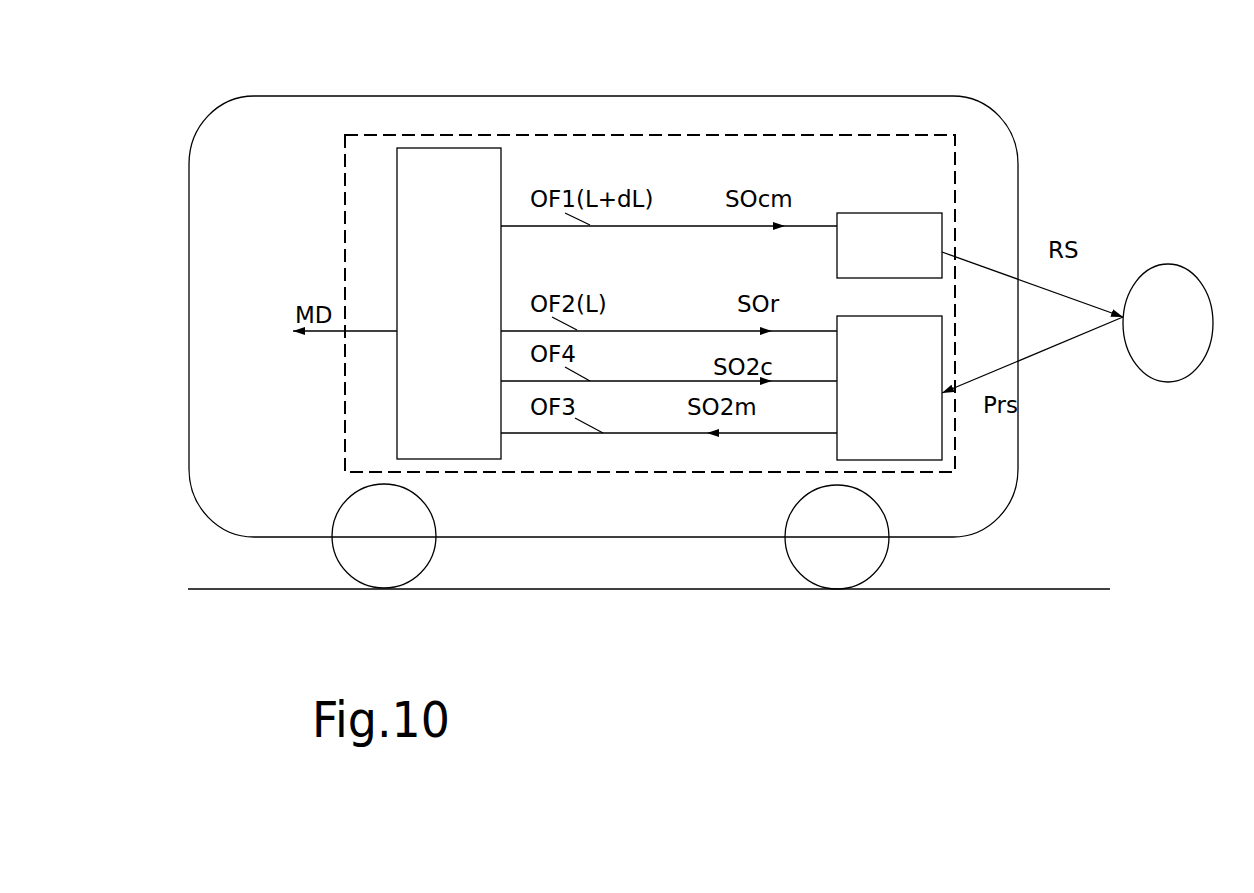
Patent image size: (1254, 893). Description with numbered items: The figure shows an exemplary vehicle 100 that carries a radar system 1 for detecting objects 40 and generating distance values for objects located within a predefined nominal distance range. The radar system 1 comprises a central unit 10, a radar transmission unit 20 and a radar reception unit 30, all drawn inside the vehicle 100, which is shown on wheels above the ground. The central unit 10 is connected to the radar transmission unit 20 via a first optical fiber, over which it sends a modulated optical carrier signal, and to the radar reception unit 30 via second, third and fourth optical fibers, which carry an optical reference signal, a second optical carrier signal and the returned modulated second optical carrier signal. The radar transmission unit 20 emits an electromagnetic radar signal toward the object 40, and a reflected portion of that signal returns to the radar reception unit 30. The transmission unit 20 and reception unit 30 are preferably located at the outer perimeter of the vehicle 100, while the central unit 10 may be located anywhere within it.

The vehicle 100 is at (460, 95).
The radar system 1 is at (345, 278).
The central unit 10 is at (449, 303).
The radar transmission unit 20 is at (889, 245).
The radar reception unit 30 is at (889, 388).
The object 40 is at (1168, 323).